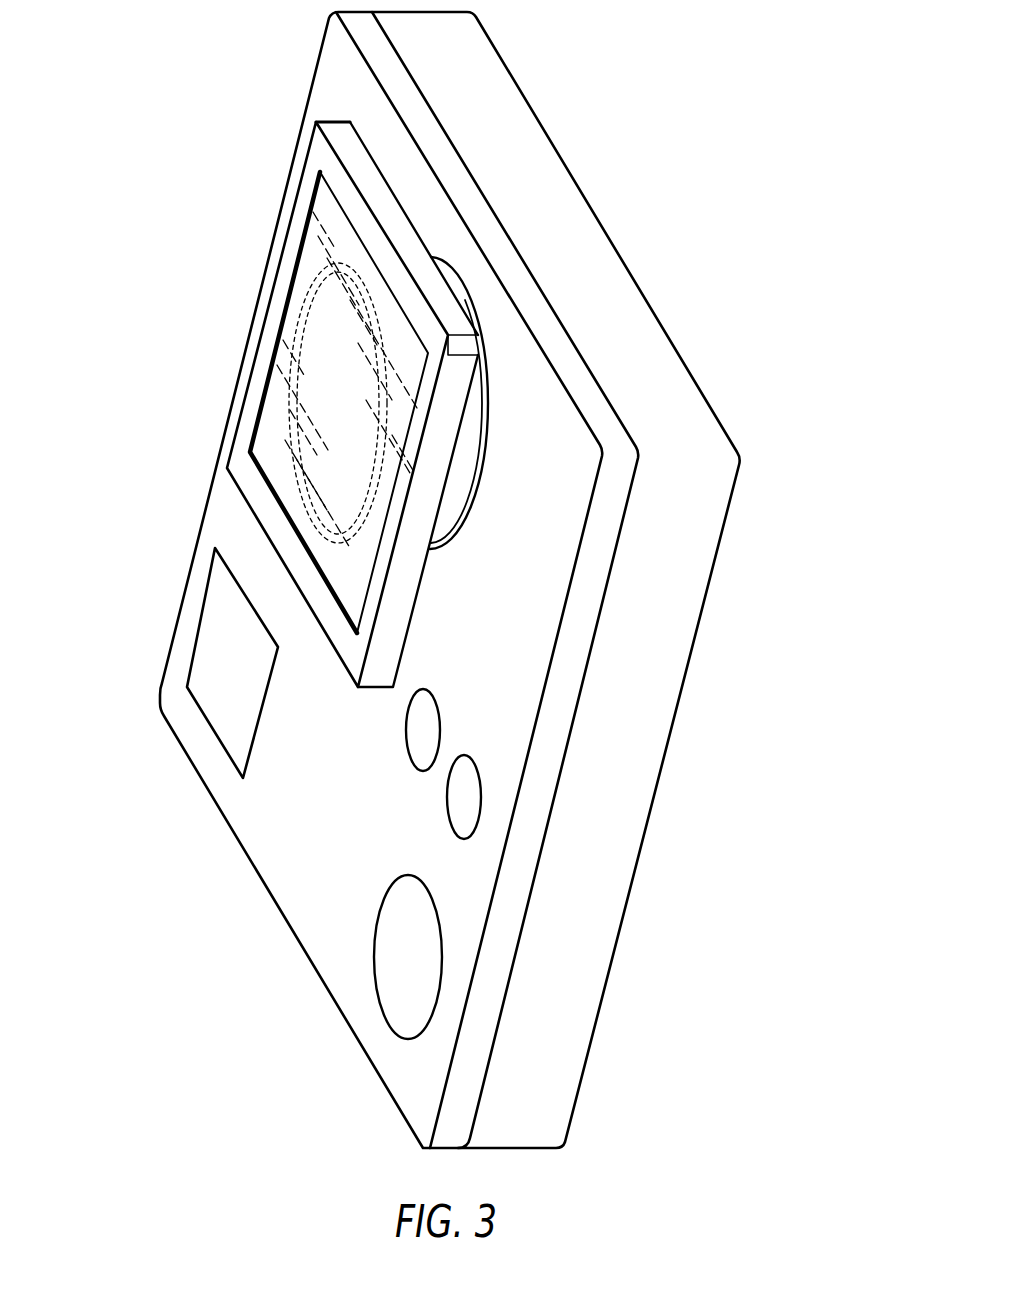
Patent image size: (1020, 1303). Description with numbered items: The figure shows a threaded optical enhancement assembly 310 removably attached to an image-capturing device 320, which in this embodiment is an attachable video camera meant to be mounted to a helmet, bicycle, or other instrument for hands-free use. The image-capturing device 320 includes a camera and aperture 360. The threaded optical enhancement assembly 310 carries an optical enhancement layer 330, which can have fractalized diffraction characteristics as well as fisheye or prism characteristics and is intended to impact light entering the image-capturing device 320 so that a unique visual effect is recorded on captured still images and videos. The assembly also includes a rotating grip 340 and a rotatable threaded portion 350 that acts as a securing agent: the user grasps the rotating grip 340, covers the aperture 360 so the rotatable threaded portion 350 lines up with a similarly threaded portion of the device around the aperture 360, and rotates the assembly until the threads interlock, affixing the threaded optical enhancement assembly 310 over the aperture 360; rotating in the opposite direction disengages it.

The threaded optical enhancement assembly 310 is at (281, 573).
The image-capturing device 320 is at (294, 952).
The optical enhancement layer 330 is at (309, 353).
The rotating grip 340 is at (310, 148).
The rotatable threaded portion 350 is at (481, 406).
The aperture 360 is at (371, 411).